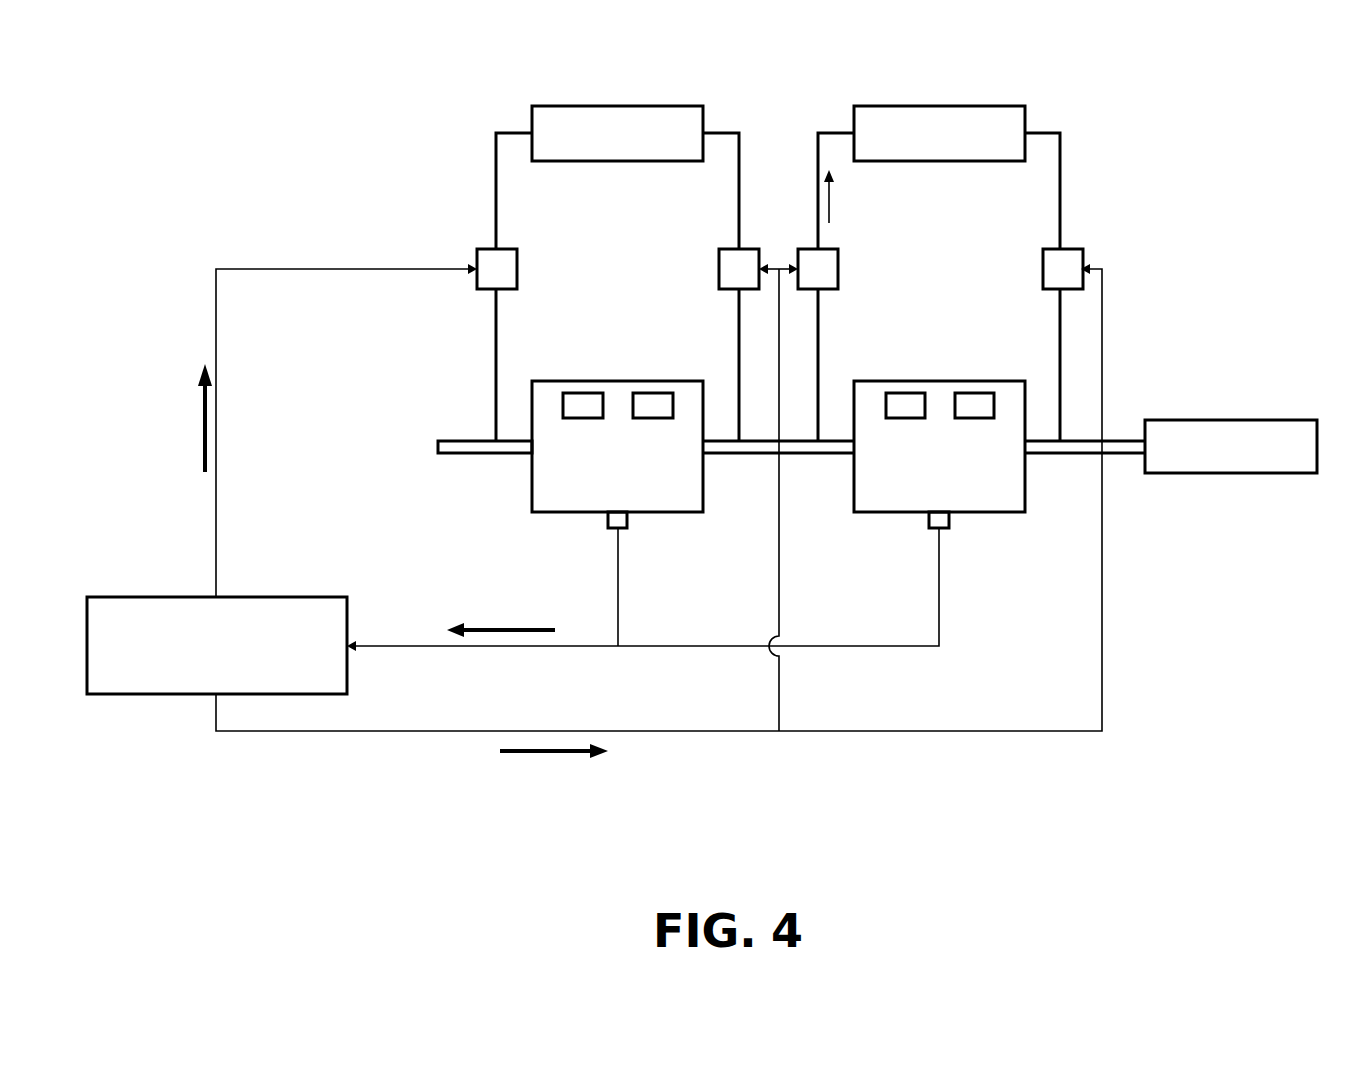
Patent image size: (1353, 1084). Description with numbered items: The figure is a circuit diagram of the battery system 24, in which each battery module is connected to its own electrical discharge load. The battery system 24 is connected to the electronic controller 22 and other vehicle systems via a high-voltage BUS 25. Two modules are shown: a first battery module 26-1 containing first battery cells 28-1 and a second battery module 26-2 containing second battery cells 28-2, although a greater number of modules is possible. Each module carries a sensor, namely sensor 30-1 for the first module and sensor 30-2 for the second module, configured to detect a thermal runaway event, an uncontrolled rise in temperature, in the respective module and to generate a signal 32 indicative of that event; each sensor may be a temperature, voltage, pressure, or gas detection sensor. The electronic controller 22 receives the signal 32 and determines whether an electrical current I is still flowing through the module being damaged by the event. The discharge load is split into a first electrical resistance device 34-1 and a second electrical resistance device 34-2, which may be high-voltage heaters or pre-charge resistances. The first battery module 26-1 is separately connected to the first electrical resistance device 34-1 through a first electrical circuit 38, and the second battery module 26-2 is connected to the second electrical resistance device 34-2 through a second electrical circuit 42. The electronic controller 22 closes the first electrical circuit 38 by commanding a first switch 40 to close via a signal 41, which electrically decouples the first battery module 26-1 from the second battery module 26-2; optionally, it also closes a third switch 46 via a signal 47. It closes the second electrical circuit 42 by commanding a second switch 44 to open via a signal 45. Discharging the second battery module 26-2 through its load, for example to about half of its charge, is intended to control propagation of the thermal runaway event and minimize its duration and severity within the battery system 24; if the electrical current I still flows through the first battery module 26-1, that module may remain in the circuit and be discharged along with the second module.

The electronic controller 22 is at (296, 597).
The battery system 24 is at (1003, 622).
The high-voltage BUS 25 is at (1232, 473).
The first battery module 26-1 is at (617, 446).
The second battery module 26-2 is at (939, 446).
The first battery cells 28-1 is at (584, 393).
The second battery cells 28-2 is at (905, 393).
The sensor 30-1 is at (606, 521).
The sensor 30-2 is at (927, 521).
The signal 32 is at (510, 628).
The first electrical resistance device 34-1 is at (662, 106).
The second electrical resistance device 34-2 is at (976, 106).
The first electrical circuit 38 is at (670, 222).
The first switch 40 is at (517, 268).
The signal 41 is at (203, 440).
The second electrical circuit 42 is at (980, 222).
The second switch 44 is at (812, 249).
The signal 45 is at (568, 767).
The third switch 46 is at (1065, 249).
The signal 47 is at (540, 753).
The electrical current I is at (832, 199).